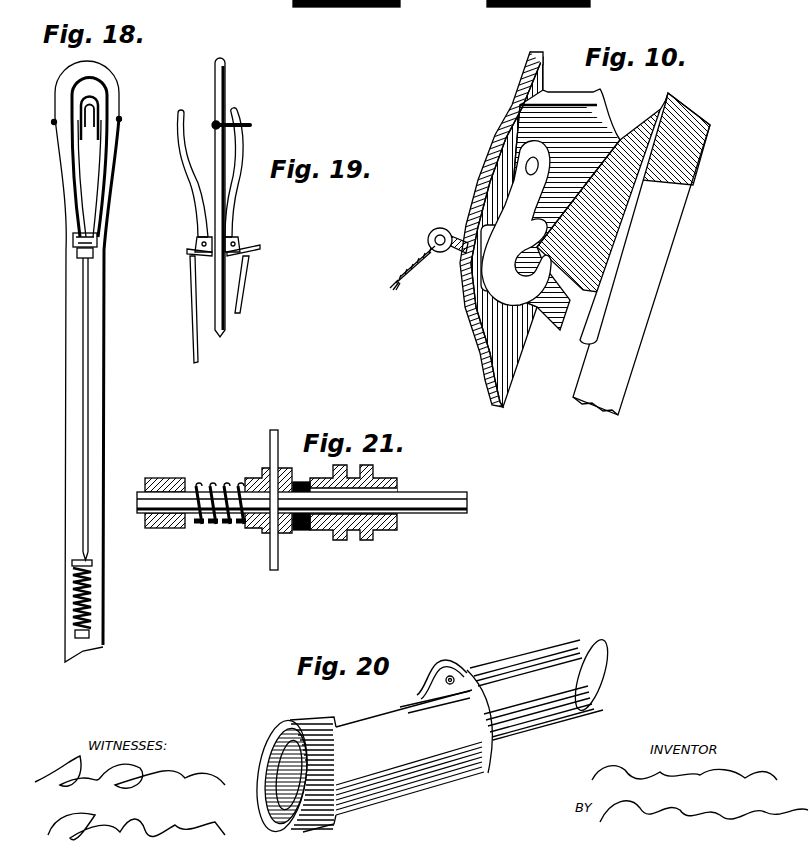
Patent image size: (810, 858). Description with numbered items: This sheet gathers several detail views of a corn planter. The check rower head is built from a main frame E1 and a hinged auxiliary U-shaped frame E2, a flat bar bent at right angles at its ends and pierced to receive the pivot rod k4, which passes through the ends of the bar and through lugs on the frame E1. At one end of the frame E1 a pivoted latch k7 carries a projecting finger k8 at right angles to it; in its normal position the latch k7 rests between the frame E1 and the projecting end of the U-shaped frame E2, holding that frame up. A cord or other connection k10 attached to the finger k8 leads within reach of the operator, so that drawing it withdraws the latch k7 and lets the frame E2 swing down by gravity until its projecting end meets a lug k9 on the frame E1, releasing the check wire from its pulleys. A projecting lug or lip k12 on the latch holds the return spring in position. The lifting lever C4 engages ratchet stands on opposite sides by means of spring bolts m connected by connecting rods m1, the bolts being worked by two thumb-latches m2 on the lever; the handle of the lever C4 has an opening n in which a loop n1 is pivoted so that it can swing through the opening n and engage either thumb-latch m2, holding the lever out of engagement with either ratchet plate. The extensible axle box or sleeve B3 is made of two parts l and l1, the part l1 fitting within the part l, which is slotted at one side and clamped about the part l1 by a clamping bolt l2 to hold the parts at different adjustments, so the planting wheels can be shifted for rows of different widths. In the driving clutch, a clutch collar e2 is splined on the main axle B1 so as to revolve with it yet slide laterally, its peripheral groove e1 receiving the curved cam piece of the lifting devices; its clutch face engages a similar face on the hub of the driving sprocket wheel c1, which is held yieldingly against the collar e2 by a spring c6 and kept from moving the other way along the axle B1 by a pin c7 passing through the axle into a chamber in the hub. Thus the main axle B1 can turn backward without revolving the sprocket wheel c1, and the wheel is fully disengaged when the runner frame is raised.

In FIG. 18, the opening n is at (88, 76).
In FIG. 18, the loop n1 is at (99, 100).
In FIG. 19, the loop n1 is at (247, 125).
In FIG. 18, the thumb-latches m2 is at (86, 163).
In FIG. 19, the thumb-latches m2 is at (242, 138).
In FIG. 18, the lifting lever C4 is at (217, 280).
In FIG. 18, the connecting rods m1 is at (86, 325).
In FIG. 19, the connecting rods m1 is at (192, 357).
In FIG. 18, the spring bolts m is at (89, 577).
In FIG. 10, the lug k9 is at (553, 97).
In FIG. 10, the main frame E1 is at (500, 128).
In FIG. 10, the projecting finger k8 is at (436, 228).
In FIG. 10, the cord k10 is at (413, 270).
In FIG. 10, the projecting lug or lip k12 is at (460, 273).
In FIG. 10, the pivoted latch k7 is at (523, 267).
In FIG. 10, the hinged auxiliary U-shaped frame E2 is at (641, 254).
In FIG. 10, the pivot rod k4 is at (597, 287).
In FIG. 21, the sleeve part l1 is at (165, 490).
In FIG. 20, the sleeve part l1 is at (542, 688).
In FIG. 21, the spring c6 is at (208, 488).
In FIG. 21, the peripheral groove e1 is at (370, 475).
In FIG. 21, the main axle B1 is at (302, 491).
In FIG. 21, the pin c7 is at (262, 533).
In FIG. 21, the driving sprocket wheel c1 is at (273, 568).
In FIG. 21, the clutch collar e2 is at (315, 530).
In FIG. 20, the extensible sleeve B3 is at (442, 659).
In FIG. 20, the clamping bolt l2 is at (455, 677).
In FIG. 20, the sleeve part l is at (371, 752).